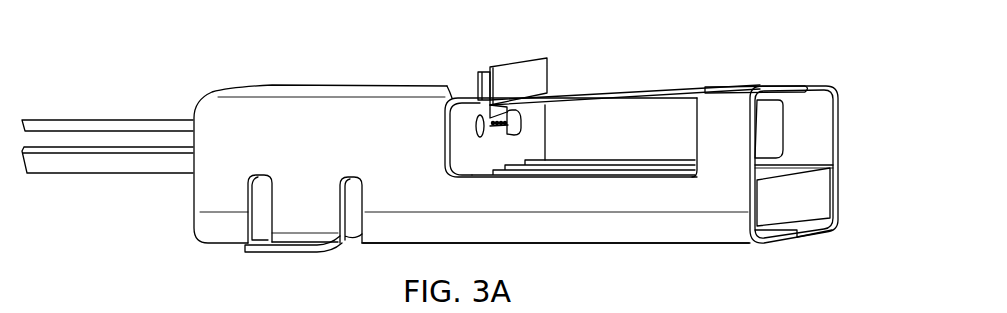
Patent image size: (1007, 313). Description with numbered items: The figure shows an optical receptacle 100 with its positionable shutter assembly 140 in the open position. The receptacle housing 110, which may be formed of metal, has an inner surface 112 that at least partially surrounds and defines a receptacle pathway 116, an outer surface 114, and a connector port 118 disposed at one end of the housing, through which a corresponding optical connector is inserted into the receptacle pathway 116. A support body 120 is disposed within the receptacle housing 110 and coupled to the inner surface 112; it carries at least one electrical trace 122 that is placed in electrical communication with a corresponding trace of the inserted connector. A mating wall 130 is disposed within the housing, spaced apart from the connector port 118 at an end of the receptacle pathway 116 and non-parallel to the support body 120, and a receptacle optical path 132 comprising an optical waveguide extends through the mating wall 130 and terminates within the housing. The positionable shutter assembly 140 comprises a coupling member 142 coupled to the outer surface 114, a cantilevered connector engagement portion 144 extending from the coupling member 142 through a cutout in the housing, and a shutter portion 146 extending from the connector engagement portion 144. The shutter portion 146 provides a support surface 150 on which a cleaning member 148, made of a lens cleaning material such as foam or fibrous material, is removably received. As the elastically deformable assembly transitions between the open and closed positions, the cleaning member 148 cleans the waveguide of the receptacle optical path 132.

The optical receptacle 100 is at (143, 78).
The receptacle housing 110 is at (302, 81).
The inner surface 112 is at (813, 113).
The outer surface 114 is at (595, 202).
The receptacle pathway 116 is at (823, 148).
The connector port 118 is at (840, 110).
The support body 120 is at (827, 192).
The electrical trace 122 is at (640, 173).
The mating wall 130 is at (541, 117).
The receptacle optical path 132 is at (510, 125).
The positionable shutter assembly 140 is at (592, 64).
The coupling member 142 is at (770, 87).
The connector engagement portion 144 is at (637, 92).
The shutter portion 146 is at (547, 78).
The cleaning member 148 is at (478, 78).
The support surface 150 is at (487, 76).